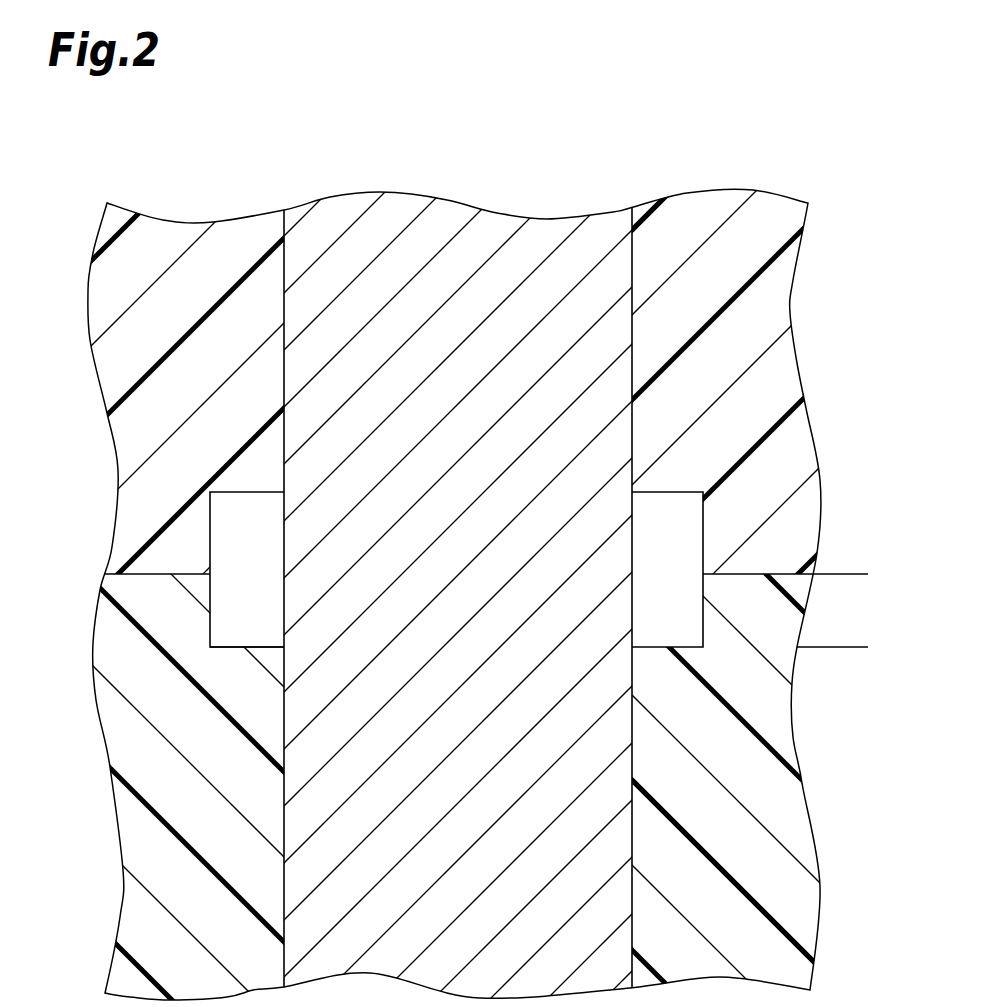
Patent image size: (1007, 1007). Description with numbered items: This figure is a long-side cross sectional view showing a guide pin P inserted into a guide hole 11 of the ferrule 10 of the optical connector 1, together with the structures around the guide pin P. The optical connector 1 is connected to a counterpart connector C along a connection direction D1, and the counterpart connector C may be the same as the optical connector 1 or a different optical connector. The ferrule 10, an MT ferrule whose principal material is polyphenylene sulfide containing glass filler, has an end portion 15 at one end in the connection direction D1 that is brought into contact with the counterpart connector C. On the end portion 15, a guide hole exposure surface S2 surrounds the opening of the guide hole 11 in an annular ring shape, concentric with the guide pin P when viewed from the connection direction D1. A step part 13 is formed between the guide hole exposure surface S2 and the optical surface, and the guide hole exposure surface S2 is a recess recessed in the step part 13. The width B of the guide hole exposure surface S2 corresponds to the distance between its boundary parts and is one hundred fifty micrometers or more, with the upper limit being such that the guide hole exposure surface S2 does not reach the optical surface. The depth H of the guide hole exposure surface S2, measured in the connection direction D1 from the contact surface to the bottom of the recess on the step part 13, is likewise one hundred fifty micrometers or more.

The optical connector 1 is at (862, 728).
The ferrule 10 is at (823, 890).
The guide hole 11 is at (632, 420).
The step part 13 is at (203, 582).
The end portion 15 is at (756, 572).
The guide pin P is at (587, 256).
The counterpart connector C is at (823, 429).
The guide hole exposure surface S2 is at (235, 647).
The width of the guide hole exposure surface B is at (282, 527).
The depth of the guide hole exposure surface H is at (856, 576).
The connection direction D1 is at (913, 417).